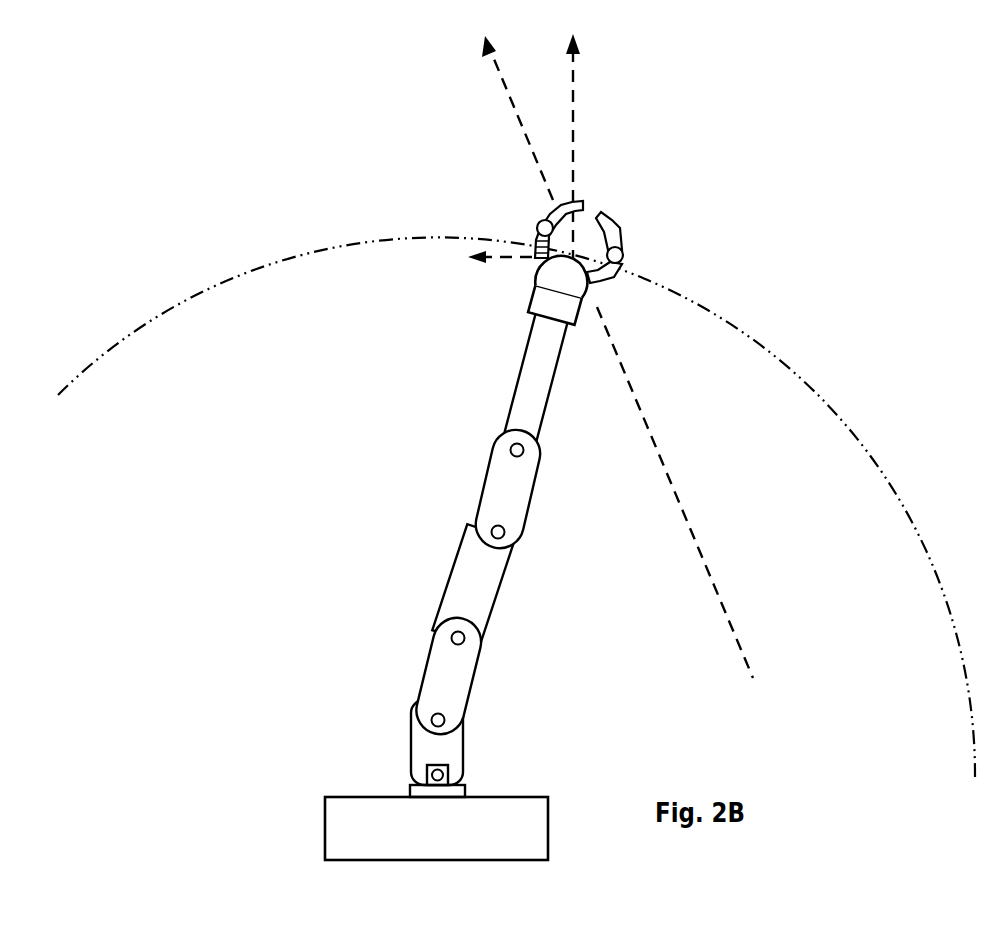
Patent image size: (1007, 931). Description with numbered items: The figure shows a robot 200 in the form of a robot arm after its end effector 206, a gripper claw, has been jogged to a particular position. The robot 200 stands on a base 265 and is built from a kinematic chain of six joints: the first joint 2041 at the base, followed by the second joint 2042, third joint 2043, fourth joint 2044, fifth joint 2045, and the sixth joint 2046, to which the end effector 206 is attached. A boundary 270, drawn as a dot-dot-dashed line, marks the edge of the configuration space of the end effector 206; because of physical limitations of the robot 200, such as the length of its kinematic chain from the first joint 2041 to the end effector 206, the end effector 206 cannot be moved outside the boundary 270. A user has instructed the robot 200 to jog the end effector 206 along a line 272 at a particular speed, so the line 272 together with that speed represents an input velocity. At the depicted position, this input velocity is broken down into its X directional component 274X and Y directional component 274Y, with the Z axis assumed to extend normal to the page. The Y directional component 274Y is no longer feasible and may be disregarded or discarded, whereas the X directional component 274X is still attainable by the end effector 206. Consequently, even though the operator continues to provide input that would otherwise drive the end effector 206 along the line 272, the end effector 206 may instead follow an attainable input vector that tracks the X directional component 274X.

The robot 200 is at (292, 645).
The first joint 2041 is at (428, 772).
The second joint 2042 is at (431, 718).
The third joint 2043 is at (447, 627).
The fourth joint 2044 is at (500, 540).
The fifth joint 2045 is at (520, 458).
The sixth joint 2046 is at (540, 308).
The end effector 206 is at (633, 272).
The base 265 is at (500, 796).
The boundary 270 is at (838, 418).
The line 272 is at (632, 380).
The X directional component 274X is at (493, 256).
The Y directional component 274Y is at (573, 186).